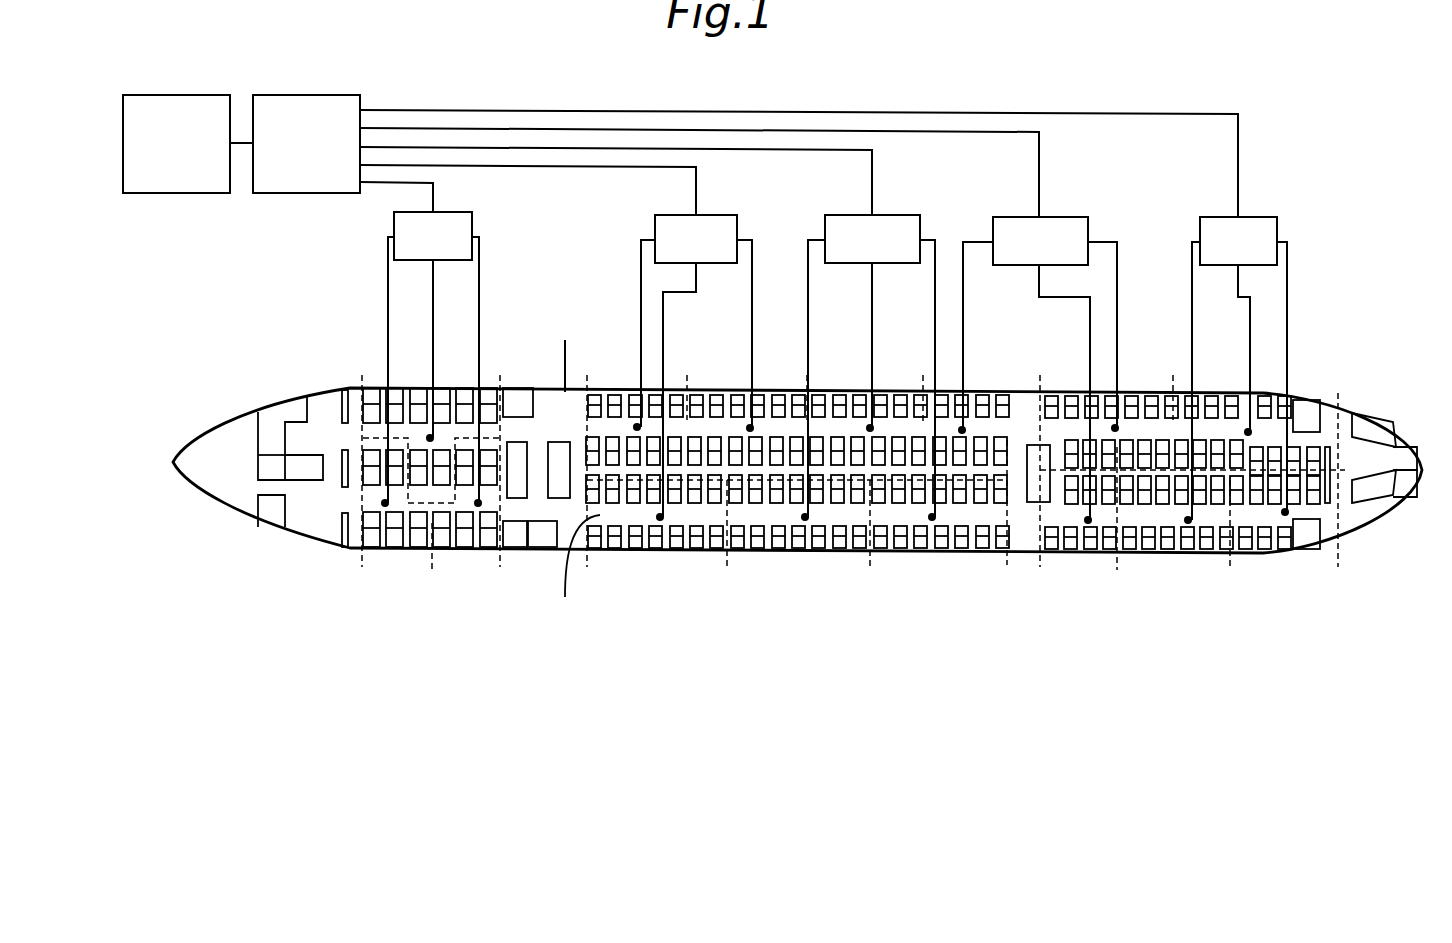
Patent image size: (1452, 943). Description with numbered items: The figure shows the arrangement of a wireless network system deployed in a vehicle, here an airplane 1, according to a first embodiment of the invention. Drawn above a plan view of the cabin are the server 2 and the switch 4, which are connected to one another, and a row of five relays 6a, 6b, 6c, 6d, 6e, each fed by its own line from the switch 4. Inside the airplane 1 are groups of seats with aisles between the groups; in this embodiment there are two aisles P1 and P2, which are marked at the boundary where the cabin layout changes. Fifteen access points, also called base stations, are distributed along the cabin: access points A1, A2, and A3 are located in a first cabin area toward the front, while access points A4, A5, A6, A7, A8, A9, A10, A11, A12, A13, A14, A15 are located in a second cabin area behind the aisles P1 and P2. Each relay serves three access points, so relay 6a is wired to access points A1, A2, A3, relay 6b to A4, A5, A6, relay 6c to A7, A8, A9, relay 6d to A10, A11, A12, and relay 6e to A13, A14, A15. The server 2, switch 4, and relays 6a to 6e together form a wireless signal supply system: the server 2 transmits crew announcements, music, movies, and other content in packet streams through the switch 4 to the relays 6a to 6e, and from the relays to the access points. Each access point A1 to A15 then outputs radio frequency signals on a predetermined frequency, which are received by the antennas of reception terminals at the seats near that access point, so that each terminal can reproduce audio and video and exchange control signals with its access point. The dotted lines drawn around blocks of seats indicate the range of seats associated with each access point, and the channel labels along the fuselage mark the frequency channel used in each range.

The airplane 1 is at (173, 462).
The server 2 is at (176, 95).
The switch 4 is at (305, 95).
The relay 6a is at (472, 222).
The relay 6b is at (737, 224).
The relay 6c is at (920, 224).
The relay 6d is at (1088, 226).
The relay 6e is at (1277, 226).
The aisle P1 is at (566, 352).
The aisle P2 is at (575, 571).
The access point A1 is at (385, 503).
The access point A2 is at (430, 438).
The access point A3 is at (478, 503).
The access point A4 is at (637, 427).
The access point A5 is at (660, 517).
The access point A6 is at (750, 428).
The access point A7 is at (805, 517).
The access point A8 is at (870, 428).
The access point A9 is at (932, 517).
The access point A10 is at (962, 430).
The access point A11 is at (1088, 520).
The access point A12 is at (1115, 428).
The access point A13 is at (1188, 520).
The access point A14 is at (1248, 432).
The access point A15 is at (1285, 512).